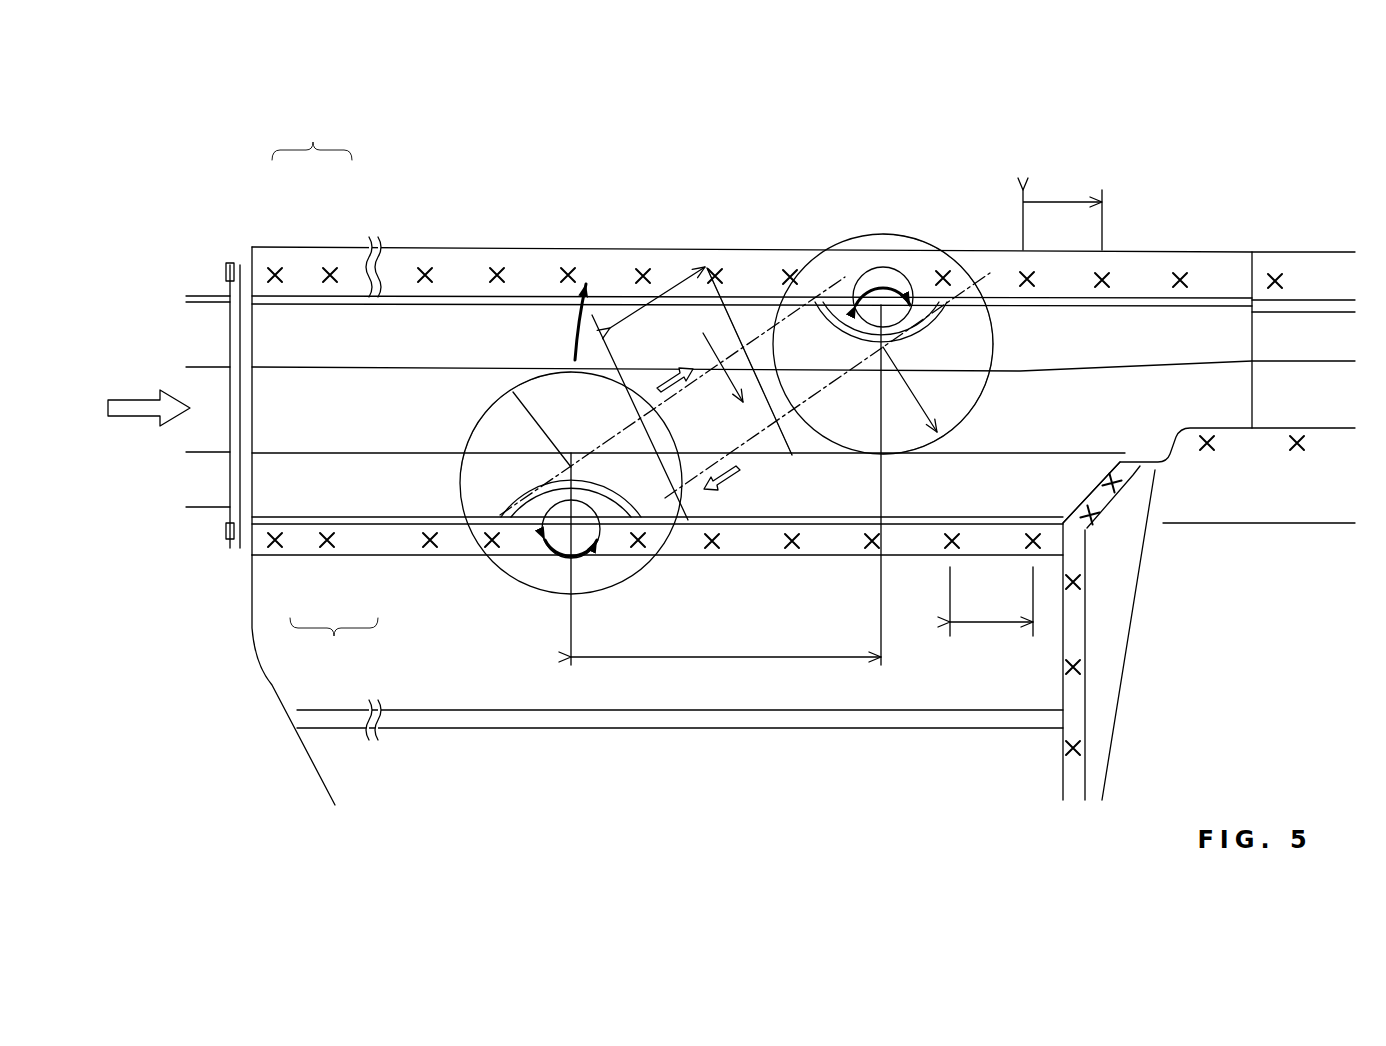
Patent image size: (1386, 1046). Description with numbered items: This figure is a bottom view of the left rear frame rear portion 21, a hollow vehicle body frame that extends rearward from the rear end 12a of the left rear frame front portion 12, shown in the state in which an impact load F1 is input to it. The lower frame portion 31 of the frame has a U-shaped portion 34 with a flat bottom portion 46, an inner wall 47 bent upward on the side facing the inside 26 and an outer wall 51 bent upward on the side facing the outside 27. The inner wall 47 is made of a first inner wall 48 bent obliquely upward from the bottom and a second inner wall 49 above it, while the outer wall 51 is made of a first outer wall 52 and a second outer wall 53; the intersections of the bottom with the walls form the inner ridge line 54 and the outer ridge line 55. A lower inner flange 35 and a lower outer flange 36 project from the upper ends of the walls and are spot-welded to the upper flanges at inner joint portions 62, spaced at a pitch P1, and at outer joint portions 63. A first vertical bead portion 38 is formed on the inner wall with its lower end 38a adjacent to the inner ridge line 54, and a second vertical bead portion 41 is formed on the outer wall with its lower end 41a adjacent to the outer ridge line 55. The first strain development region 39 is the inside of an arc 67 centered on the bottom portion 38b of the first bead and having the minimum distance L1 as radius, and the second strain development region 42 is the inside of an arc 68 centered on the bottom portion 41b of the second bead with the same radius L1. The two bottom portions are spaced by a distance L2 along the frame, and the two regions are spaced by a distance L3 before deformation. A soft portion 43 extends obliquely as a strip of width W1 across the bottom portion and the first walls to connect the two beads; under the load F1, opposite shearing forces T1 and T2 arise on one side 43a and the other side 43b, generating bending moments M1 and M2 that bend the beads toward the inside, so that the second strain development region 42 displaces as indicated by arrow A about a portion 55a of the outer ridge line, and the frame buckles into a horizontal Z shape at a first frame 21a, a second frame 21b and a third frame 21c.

The left rear frame front portion 12 is at (1326, 427).
The rear end of the left rear frame front portion 12a is at (1292, 262).
The left rear frame rear portion 21 is at (485, 246).
The first frame 21a is at (1065, 485).
The second frame 21b is at (393, 504).
The third frame 21c is at (828, 512).
The inside 26 is at (672, 64).
The outside 27 is at (677, 870).
The lower frame portion 31 is at (690, 262).
The U-shaped portion 34 is at (853, 530).
The lower inner flange 35 is at (767, 262).
The lower outer flange 36 is at (762, 551).
The first vertical bead portion 38 is at (921, 300).
The lower end of the first vertical bead portion 38a is at (826, 300).
The bottom portion of the first vertical bead portion 38b is at (887, 349).
The first strain development region 39 is at (992, 330).
The second vertical bead portion 41 is at (527, 530).
The lower end of the second vertical bead portion 41a is at (598, 562).
The bottom portion of the second vertical bead portion 41b is at (588, 481).
The second strain development region 42 is at (464, 474).
The soft portion 43 is at (784, 462).
The one side of the soft portion 43a is at (718, 365).
The other side of the soft portion 43b is at (750, 380).
The bottom portion 46 is at (296, 398).
The inner wall 47 is at (312, 133).
The first inner wall 48 is at (311, 317).
The second inner wall 49 is at (357, 300).
The outer wall 51 is at (334, 646).
The first outer wall 52 is at (298, 497).
The second outer wall 53 is at (360, 522).
The inner ridge line 54 is at (450, 367).
The outer ridge line 55 is at (992, 456).
The portion of the outer ridge line 55a is at (877, 460).
The inner joint portions 62 is at (270, 265).
The outer joint portions 63 is at (270, 548).
The arc 67 is at (988, 398).
The arc 68 is at (466, 538).
The arrow A is at (574, 322).
The impact load F1 is at (150, 426).
The minimum distance L1 is at (725, 407).
The distance L2 is at (722, 660).
The distance L3 is at (608, 276).
The bending moment M1 is at (882, 252).
The bending moment M2 is at (548, 586).
The pitch P1 is at (1058, 196).
The shearing force T1 is at (659, 363).
The shearing force T2 is at (724, 493).
The width W1 is at (663, 297).